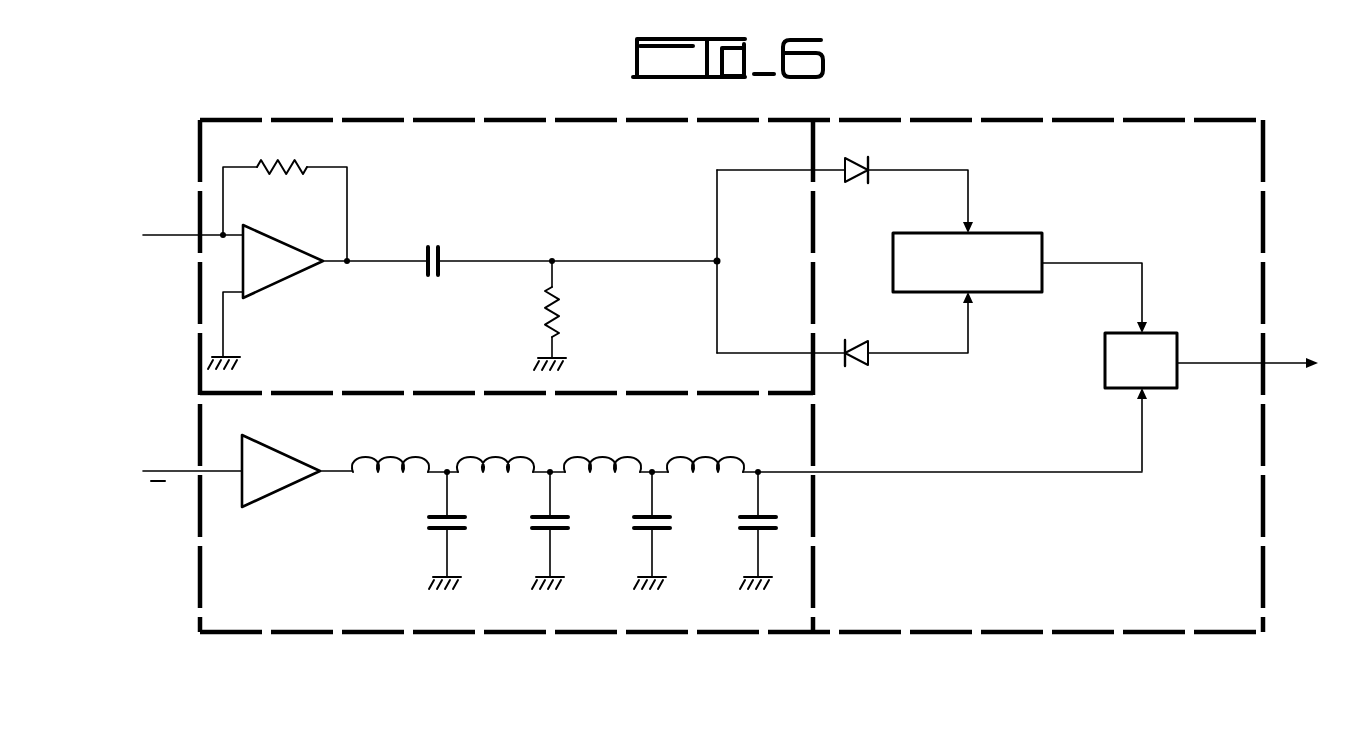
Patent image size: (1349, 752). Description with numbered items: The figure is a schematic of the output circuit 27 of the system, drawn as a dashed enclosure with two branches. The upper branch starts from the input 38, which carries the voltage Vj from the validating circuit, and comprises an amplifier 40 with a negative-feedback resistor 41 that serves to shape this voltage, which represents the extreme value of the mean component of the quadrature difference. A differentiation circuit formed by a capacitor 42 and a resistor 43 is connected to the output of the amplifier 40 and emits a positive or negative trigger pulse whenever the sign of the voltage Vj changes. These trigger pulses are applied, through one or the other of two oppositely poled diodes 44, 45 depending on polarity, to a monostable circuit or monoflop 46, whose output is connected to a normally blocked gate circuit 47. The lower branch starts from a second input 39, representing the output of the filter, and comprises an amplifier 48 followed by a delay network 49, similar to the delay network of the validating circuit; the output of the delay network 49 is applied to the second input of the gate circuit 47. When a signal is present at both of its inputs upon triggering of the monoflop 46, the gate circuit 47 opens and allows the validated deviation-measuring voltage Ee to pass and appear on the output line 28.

The output circuit 27 is at (674, 640).
The line 28 is at (1313, 358).
The input 38 is at (198, 234).
The second input 39 is at (198, 469).
The amplifier 40 is at (268, 236).
The negative-feedback resistor 41 is at (283, 157).
The capacitor 42 is at (428, 246).
The resistor 43 is at (548, 312).
The diode 44 is at (855, 160).
The diode 45 is at (856, 343).
The monostable circuit 46 is at (1016, 234).
The gate circuit 47 is at (1105, 355).
The amplifier 48 is at (273, 449).
The delay network 49 is at (410, 489).